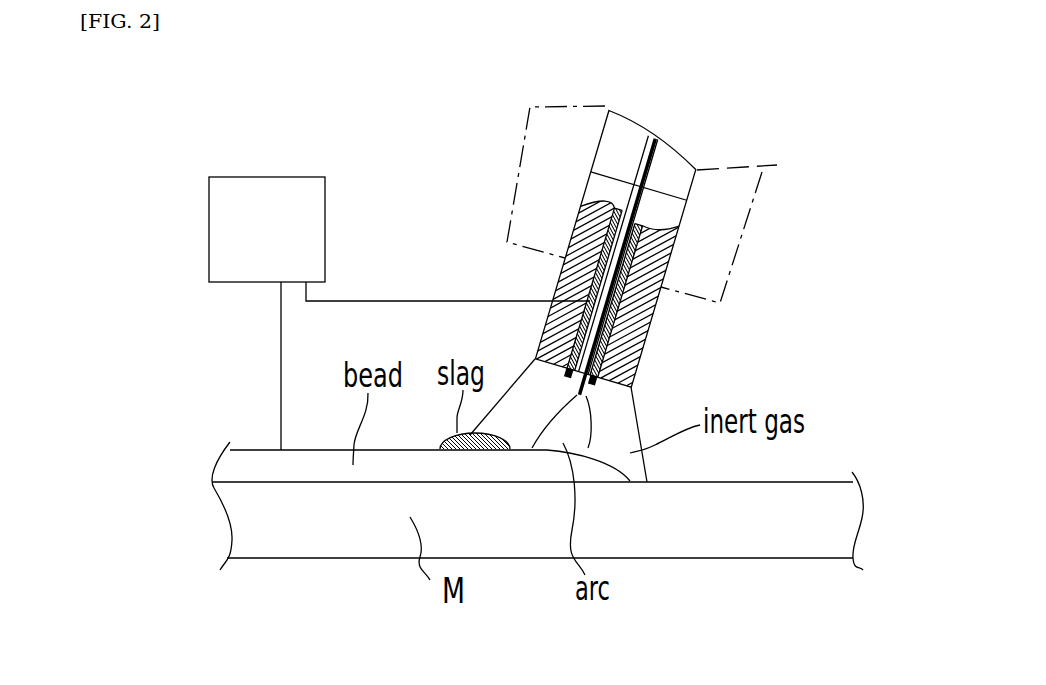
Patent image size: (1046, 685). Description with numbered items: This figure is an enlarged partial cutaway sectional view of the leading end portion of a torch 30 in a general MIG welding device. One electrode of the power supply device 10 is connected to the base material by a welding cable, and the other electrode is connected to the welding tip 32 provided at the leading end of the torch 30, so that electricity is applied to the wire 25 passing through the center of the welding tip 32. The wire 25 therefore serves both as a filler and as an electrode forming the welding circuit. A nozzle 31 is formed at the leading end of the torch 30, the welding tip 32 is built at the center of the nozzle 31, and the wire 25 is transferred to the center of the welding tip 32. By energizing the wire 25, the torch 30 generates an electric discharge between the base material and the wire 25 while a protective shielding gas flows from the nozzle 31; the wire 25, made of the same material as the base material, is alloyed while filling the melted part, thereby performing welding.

The power supply device 10 is at (267, 192).
The wire 25 is at (582, 360).
The torch 30 is at (610, 257).
The nozzle 31 is at (650, 310).
The welding tip 32 is at (610, 348).